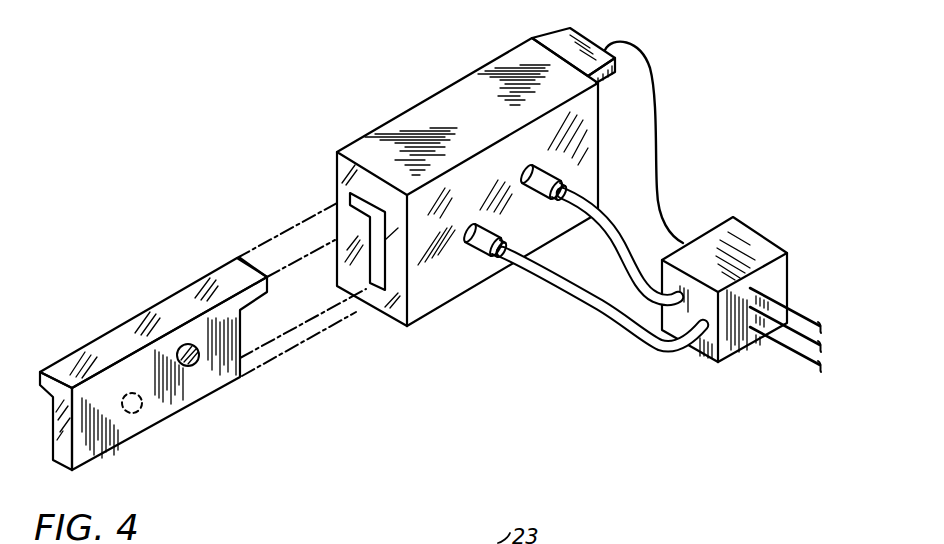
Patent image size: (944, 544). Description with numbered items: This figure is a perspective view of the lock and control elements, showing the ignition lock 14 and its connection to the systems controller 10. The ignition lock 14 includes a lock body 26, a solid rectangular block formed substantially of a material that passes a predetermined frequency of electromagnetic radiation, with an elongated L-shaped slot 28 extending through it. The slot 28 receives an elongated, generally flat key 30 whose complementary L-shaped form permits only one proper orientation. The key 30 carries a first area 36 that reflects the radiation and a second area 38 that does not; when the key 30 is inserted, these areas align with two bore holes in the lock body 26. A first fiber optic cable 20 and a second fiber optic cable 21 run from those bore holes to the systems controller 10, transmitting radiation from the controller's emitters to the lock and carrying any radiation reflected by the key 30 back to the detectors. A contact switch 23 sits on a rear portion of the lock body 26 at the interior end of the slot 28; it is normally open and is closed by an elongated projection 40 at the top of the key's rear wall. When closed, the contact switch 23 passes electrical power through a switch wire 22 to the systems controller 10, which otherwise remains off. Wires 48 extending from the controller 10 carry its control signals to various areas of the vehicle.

The systems controller 10 is at (768, 250).
The ignition lock 14 is at (330, 130).
The first fiber optic cable 20 is at (611, 217).
The second fiber optic cable 21 is at (571, 294).
The switch wire 22 is at (659, 134).
The contact switch 23 is at (592, 38).
The lock body 26 is at (435, 96).
The slot 28 is at (388, 262).
The key 30 is at (108, 328).
The first area 36 is at (197, 366).
The second area 38 is at (137, 412).
The elongated projection 40 is at (232, 270).
The wires 48 is at (825, 323).